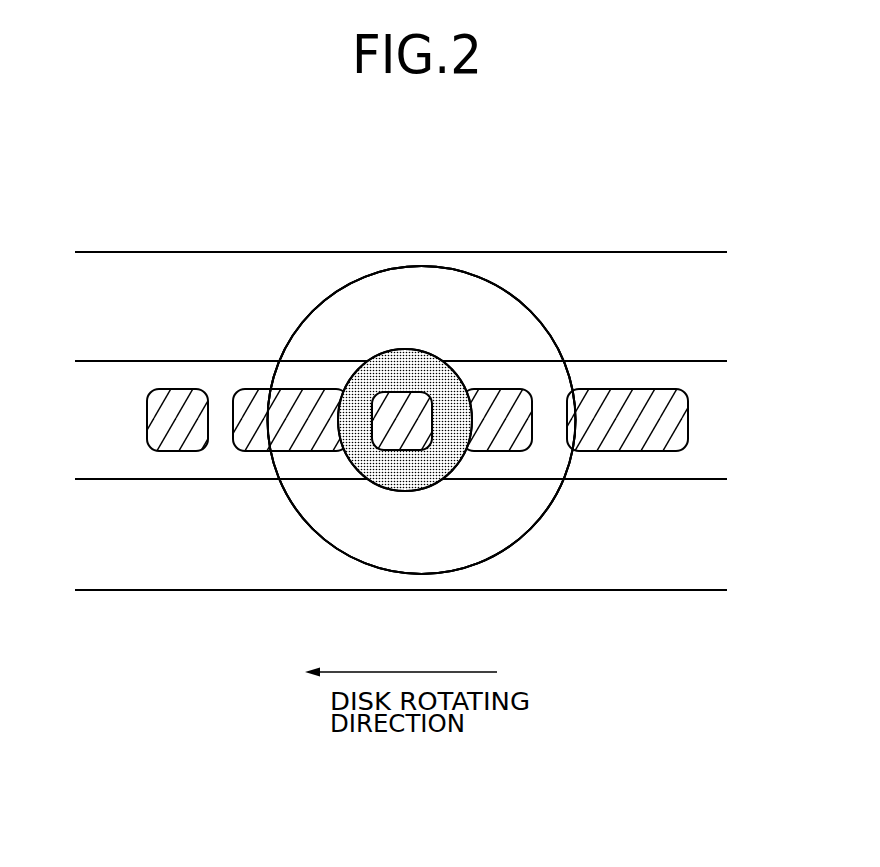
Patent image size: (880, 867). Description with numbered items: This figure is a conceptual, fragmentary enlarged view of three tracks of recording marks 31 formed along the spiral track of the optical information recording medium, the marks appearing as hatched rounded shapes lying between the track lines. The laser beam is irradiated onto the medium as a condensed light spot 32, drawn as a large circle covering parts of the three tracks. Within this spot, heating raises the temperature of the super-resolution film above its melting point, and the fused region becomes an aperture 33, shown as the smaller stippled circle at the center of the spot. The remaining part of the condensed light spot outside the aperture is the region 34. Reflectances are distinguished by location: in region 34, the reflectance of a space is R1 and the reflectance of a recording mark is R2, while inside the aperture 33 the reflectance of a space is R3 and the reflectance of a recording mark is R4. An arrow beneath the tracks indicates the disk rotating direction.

The reflectance of a space in the region other than the aperture R1 is at (330, 320).
The reflectance of the recording mark in the region other than the aperture R2 is at (262, 440).
The reflectance of a space within the aperture R3 is at (392, 370).
The reflectance of the recording mark within the aperture R4 is at (417, 440).
The recording mark 31 is at (608, 405).
The condensed light spot 32 is at (470, 273).
The aperture 33 is at (370, 488).
The region other than the aperture 34 is at (517, 505).